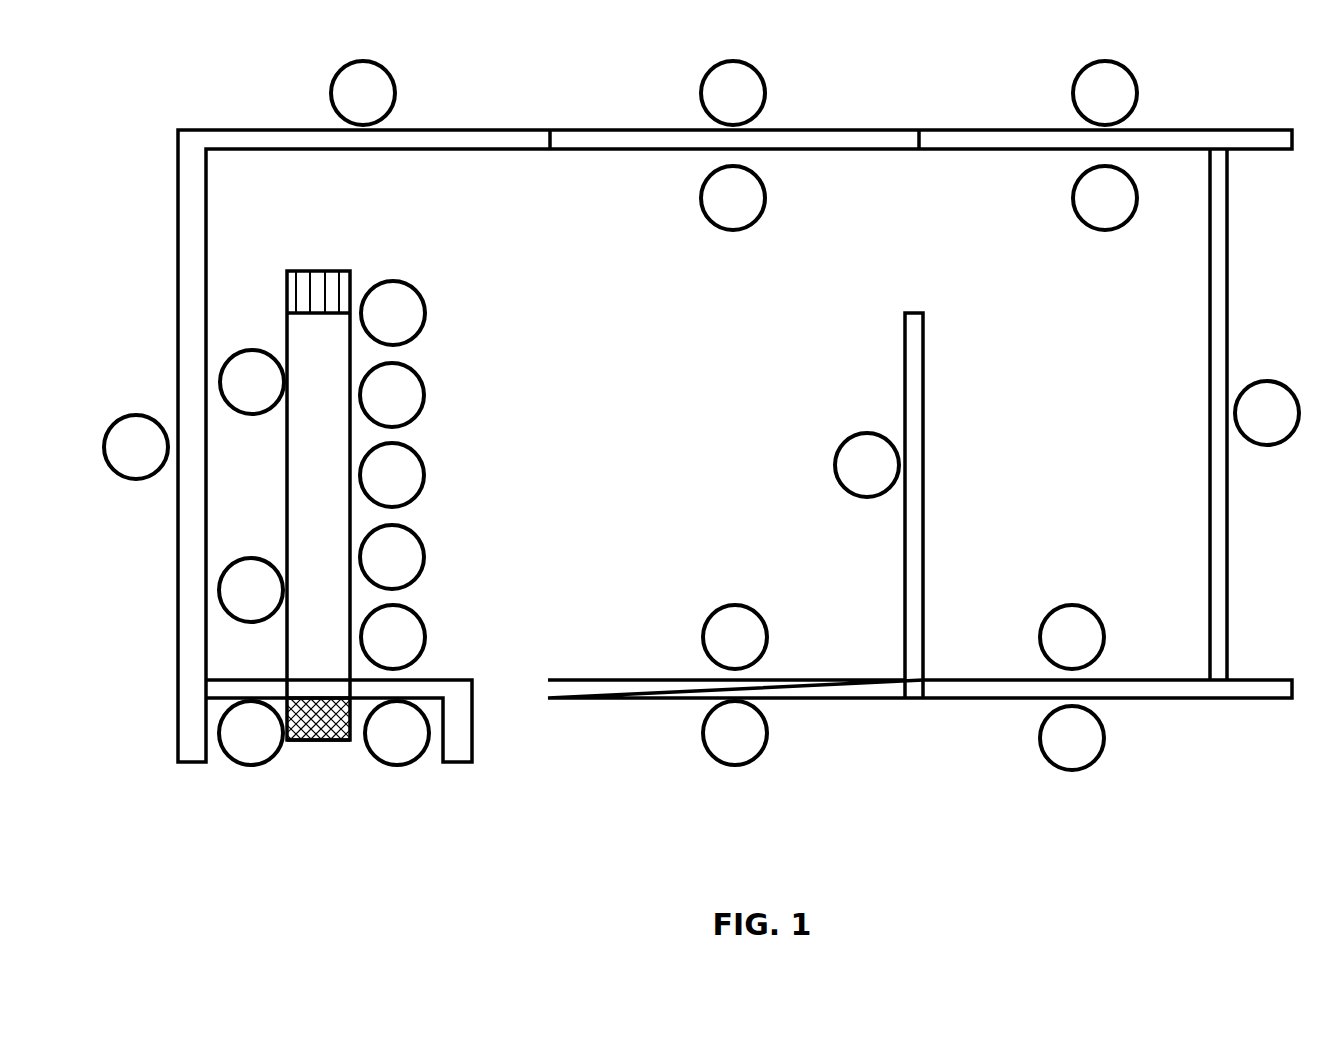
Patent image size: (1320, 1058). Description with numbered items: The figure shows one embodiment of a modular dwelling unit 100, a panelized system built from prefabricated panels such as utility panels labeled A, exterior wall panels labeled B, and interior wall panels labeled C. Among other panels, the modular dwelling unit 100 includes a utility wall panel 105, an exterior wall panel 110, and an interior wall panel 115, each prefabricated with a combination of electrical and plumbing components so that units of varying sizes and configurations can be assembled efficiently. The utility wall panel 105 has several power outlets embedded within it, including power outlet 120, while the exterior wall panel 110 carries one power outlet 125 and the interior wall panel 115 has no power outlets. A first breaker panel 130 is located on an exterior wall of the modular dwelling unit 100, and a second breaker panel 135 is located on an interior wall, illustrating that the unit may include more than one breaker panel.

The modular dwelling unit 100 is at (226, 52).
The utility wall panel 105 is at (341, 534).
The exterior wall panel 110 is at (784, 699).
The interior wall panel 115 is at (906, 399).
The power outlet 120 is at (424, 621).
The power outlet 125 is at (712, 612).
The first breaker panel 130 is at (317, 741).
The second breaker panel 135 is at (318, 271).